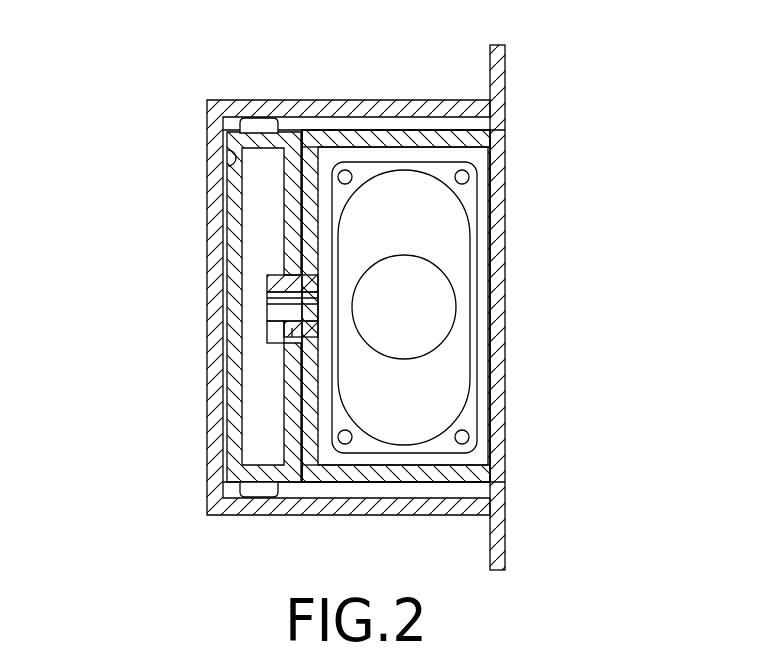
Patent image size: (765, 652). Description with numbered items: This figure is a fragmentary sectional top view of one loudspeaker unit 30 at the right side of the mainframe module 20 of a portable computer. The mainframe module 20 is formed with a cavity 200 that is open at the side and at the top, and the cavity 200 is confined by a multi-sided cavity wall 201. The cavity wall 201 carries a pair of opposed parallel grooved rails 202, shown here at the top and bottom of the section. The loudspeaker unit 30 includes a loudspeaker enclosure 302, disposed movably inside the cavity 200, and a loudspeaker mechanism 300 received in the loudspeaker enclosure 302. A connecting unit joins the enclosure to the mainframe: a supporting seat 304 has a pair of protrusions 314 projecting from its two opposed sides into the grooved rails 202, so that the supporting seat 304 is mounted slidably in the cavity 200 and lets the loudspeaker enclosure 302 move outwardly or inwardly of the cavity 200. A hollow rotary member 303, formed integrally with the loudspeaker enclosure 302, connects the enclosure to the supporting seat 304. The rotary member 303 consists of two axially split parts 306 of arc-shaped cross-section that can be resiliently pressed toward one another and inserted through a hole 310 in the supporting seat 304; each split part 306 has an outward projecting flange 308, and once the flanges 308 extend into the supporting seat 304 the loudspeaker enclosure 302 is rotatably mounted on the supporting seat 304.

The mainframe module 20 is at (307, 108).
The cavity 200 is at (237, 157).
The cavity wall 201 is at (380, 117).
The grooved rail 202 is at (435, 123).
The loudspeaker unit 30 is at (522, 150).
The loudspeaker mechanism 300 is at (438, 243).
The loudspeaker enclosure 302 is at (502, 183).
The rotary member 303 is at (104, 310).
The supporting seat 304 is at (240, 242).
The split part 306 is at (292, 333).
The flange 308 is at (275, 333).
The hole 310 is at (290, 287).
The protrusion 314 is at (260, 124).